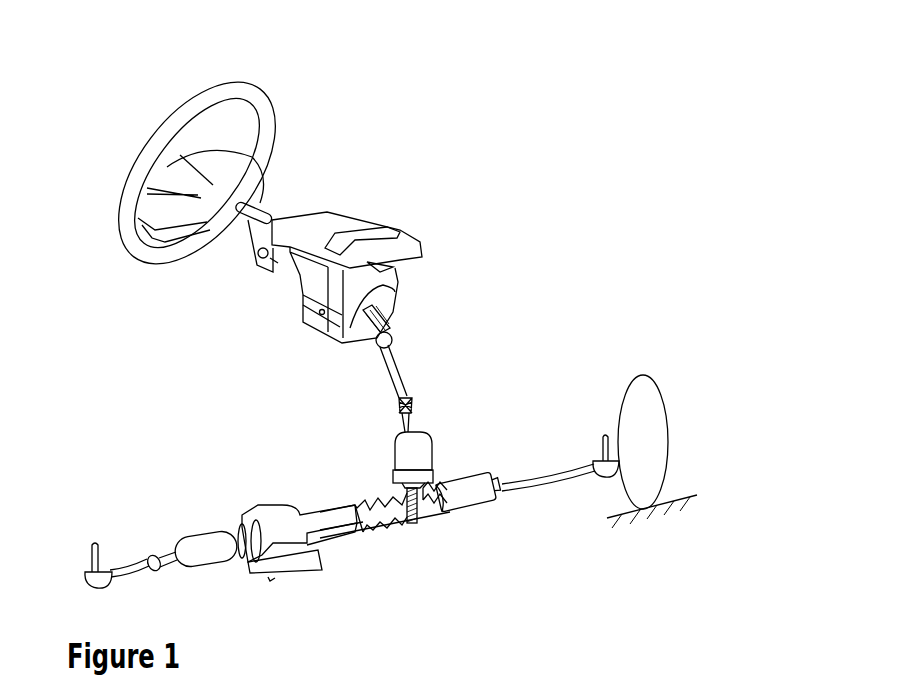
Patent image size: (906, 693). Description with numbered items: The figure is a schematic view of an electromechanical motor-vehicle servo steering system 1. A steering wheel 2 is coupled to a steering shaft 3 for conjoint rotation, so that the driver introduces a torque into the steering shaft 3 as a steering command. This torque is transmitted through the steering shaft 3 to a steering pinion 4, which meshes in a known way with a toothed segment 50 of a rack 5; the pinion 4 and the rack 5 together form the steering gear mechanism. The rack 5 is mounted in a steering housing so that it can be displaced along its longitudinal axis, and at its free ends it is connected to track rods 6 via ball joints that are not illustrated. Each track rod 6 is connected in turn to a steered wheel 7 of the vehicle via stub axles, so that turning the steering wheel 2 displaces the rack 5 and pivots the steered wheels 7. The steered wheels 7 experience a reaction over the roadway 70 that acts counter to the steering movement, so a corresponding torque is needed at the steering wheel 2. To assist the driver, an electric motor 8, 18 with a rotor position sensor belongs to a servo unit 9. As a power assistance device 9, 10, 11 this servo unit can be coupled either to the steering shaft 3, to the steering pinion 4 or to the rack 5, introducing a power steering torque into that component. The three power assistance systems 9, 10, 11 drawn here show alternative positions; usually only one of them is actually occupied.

The electromechanical motor-vehicle servo steering system 1 is at (478, 114).
The steering wheel 2 is at (267, 113).
The steering shaft 3 is at (258, 210).
The steering pinion 4 is at (411, 524).
The rack 5 is at (395, 514).
The track rods 6 is at (152, 575).
The steered wheel 7 is at (643, 392).
The electric motor 8 is at (337, 520).
The electric motor 18 is at (287, 520).
The servo unit 9 is at (337, 538).
The power assistance device 10 is at (290, 293).
The power assistance device 11 is at (422, 457).
The toothed segment 50 is at (363, 520).
The roadway 70 is at (678, 505).